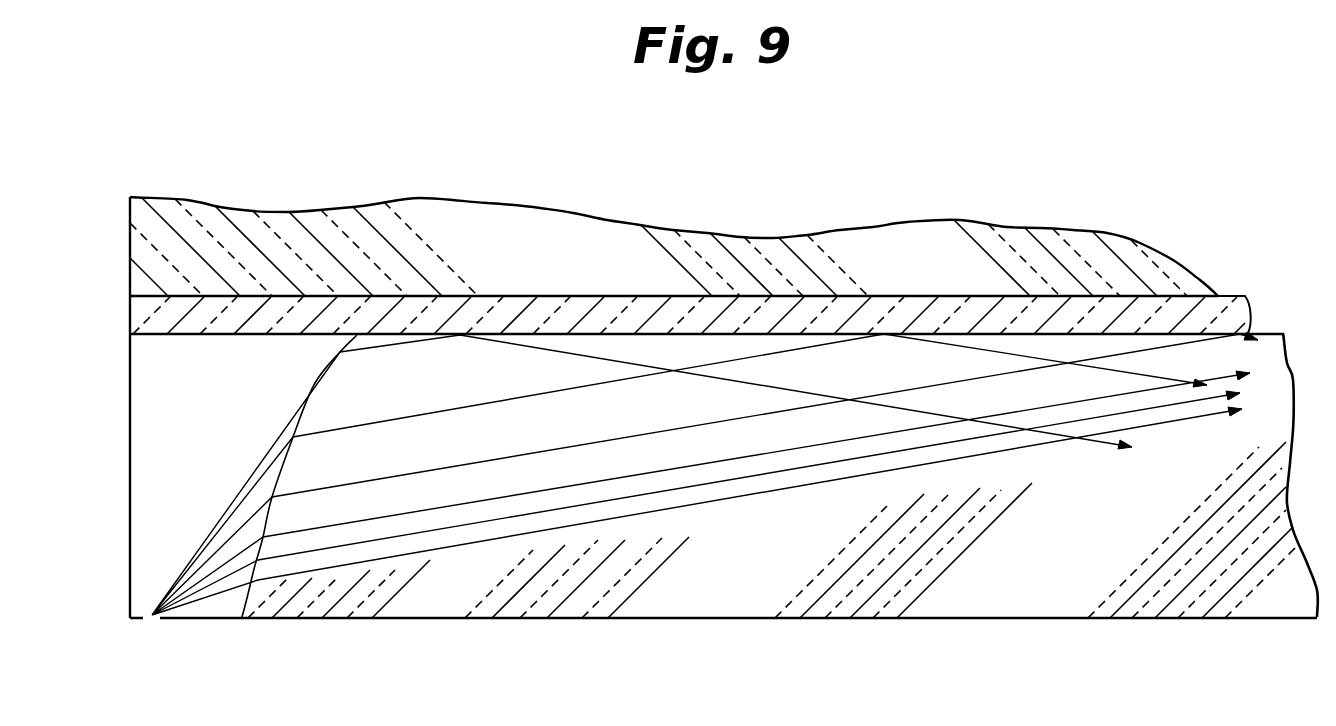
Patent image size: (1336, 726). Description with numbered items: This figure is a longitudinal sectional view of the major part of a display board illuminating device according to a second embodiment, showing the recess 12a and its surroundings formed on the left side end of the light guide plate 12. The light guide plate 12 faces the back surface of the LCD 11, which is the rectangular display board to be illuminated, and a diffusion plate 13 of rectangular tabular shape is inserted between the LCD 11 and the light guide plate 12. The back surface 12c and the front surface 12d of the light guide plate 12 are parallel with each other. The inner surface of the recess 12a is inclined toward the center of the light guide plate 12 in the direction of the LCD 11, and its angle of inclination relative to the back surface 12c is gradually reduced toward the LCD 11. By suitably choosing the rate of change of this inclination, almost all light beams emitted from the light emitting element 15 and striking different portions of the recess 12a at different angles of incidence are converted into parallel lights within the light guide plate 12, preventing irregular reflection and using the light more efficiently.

The LCD 11 is at (770, 245).
The light guide plate 12 is at (1027, 600).
The recess 12a is at (263, 537).
The back surface 12c is at (655, 618).
The front surface 12d is at (1272, 332).
The diffusion plate 13 is at (1250, 307).
The light emitting element 15 is at (152, 618).